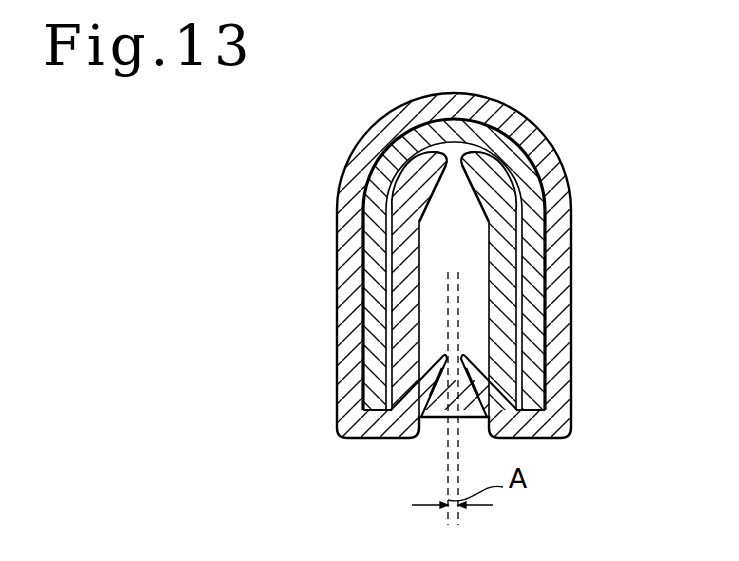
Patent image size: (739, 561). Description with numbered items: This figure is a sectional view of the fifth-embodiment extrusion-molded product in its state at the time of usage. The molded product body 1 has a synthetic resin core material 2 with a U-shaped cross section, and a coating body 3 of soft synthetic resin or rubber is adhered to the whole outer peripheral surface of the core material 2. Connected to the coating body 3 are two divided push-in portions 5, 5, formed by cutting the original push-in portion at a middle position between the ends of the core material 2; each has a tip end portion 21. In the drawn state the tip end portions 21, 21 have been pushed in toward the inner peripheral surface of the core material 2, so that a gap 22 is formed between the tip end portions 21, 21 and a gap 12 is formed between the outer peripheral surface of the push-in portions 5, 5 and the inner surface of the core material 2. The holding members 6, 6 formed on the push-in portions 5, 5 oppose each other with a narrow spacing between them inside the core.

The molded product body 1 is at (344, 173).
The synthetic resin core material 2 is at (528, 190).
The coating body 3 is at (352, 291).
The push-in portion 5 is at (405, 236).
The holding members 6 is at (440, 380).
The gap 12 is at (384, 348).
The tip end portion 21 is at (421, 152).
The gap 22 is at (453, 158).